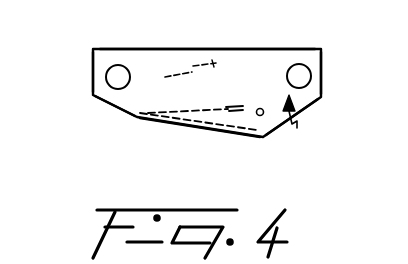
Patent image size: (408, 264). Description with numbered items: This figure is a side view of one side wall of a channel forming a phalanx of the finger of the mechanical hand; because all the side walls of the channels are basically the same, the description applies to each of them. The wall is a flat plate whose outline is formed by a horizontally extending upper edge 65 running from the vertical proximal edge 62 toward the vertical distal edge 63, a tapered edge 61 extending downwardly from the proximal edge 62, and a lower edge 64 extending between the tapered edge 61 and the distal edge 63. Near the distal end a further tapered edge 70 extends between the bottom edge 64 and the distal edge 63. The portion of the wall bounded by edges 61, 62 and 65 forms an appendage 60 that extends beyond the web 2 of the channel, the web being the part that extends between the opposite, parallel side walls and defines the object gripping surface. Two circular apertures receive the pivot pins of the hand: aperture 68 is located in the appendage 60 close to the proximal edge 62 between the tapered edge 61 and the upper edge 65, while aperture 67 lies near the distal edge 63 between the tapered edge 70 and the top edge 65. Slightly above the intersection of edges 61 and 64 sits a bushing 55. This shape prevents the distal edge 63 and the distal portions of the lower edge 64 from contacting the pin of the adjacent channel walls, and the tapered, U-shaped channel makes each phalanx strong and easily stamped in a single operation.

The web 2 is at (198, 128).
The bushing 55 is at (259, 116).
The appendage 60 is at (297, 126).
The tapered edge 61 is at (306, 107).
The proximal edge 62 is at (324, 68).
The distal edge 63 is at (93, 65).
The lower edge 64 is at (157, 122).
The upper edge 65 is at (237, 49).
The circular aperture 67 is at (113, 66).
The circular aperture 68 is at (300, 64).
The tapered edge 70 is at (110, 104).